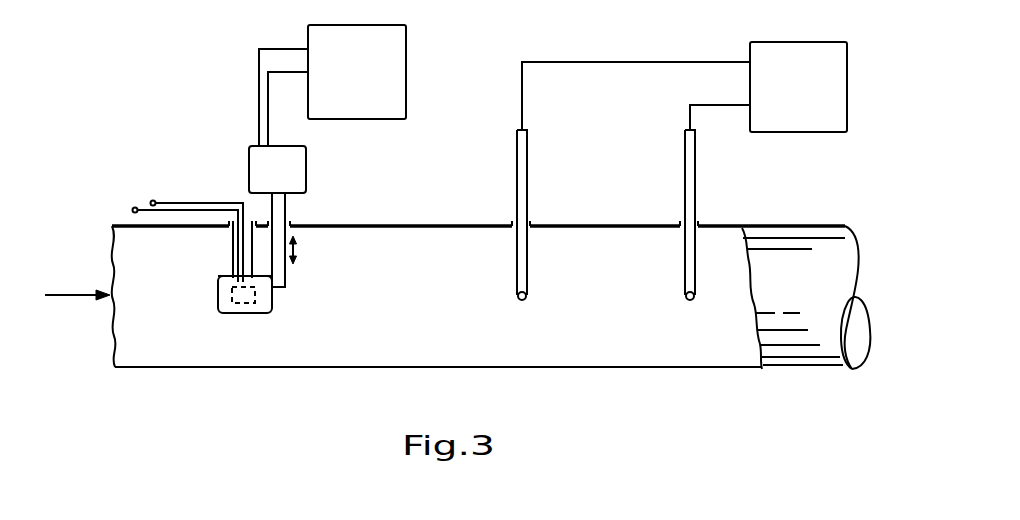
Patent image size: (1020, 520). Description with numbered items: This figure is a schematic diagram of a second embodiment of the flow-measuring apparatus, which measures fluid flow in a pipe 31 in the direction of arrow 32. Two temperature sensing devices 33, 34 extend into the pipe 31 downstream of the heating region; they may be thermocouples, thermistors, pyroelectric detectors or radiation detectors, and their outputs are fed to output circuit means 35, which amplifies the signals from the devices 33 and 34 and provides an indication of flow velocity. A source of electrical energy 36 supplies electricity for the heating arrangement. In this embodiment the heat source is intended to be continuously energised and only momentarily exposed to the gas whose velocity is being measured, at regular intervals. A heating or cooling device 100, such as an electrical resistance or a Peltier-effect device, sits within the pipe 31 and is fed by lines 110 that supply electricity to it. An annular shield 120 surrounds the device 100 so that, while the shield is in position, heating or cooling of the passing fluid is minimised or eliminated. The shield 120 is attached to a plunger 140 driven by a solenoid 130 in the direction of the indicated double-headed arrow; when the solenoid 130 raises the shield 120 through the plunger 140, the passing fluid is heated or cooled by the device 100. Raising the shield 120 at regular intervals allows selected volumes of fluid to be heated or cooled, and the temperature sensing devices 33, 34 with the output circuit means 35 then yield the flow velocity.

The pipe 31 is at (384, 227).
The arrow 32 is at (65, 278).
The temperature sensing device 33 is at (528, 294).
The temperature sensing device 34 is at (684, 294).
The output circuit means 35 is at (849, 103).
The source of electrical energy 36 is at (408, 62).
The heating or cooling device 100 is at (218, 291).
The lines 110 is at (172, 202).
The annular shield 120 is at (250, 313).
The solenoid 130 is at (307, 157).
The plunger 140 is at (287, 285).